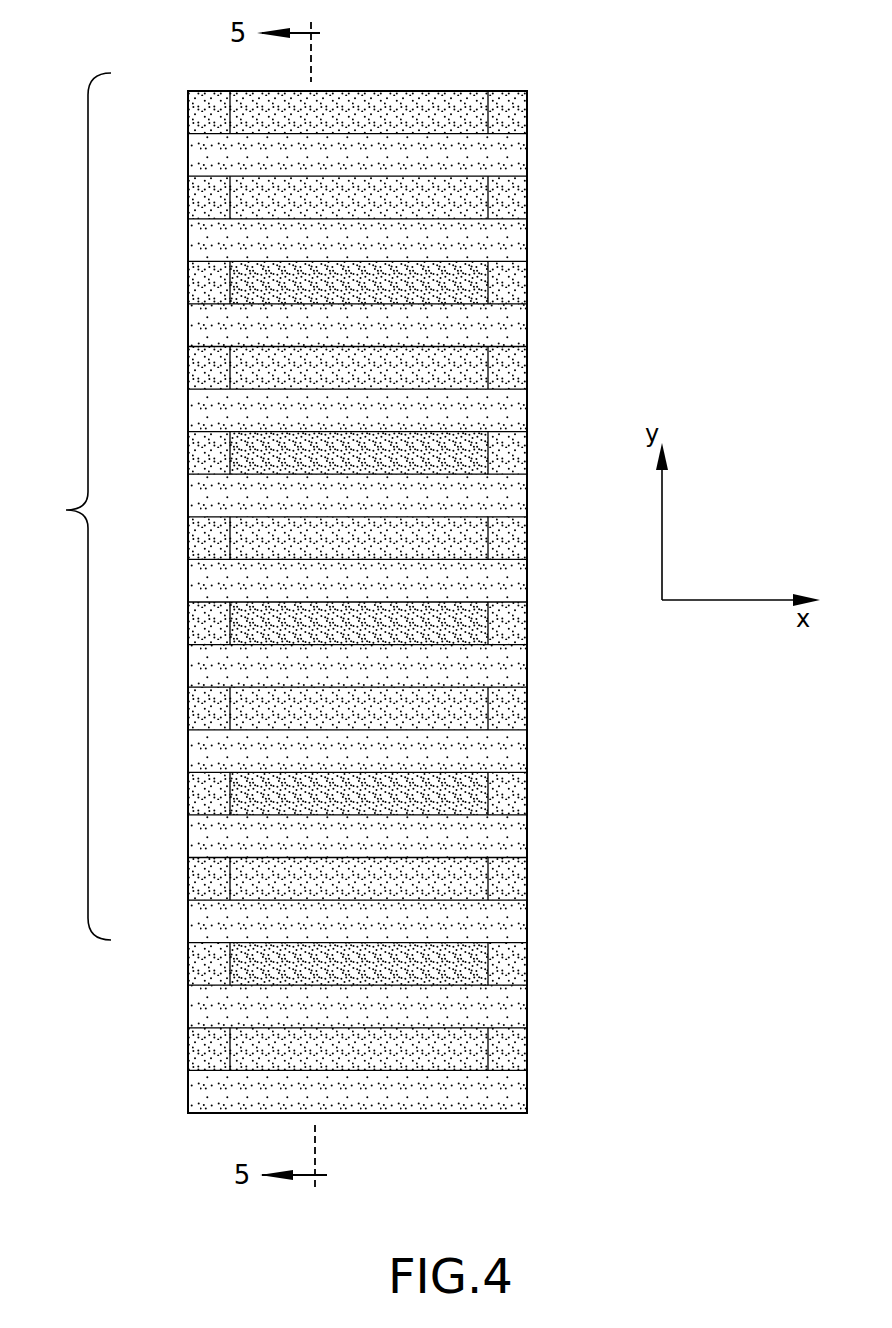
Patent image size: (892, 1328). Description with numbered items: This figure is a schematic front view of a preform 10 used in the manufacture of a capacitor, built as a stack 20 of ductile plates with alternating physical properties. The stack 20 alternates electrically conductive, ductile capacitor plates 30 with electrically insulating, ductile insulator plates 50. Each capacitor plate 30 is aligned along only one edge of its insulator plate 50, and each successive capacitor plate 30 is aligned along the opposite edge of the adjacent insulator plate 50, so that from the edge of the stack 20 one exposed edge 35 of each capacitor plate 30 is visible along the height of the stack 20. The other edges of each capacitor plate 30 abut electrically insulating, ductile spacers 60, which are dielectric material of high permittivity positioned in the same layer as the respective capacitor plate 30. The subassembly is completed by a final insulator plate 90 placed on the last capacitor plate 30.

The preform 10 is at (588, 114).
The stack 20 is at (66, 510).
The capacitor plate 30 is at (470, 448).
The exposed edge 35 is at (462, 262).
The insulator plate 50 is at (485, 322).
The spacer 60 is at (505, 102).
The final insulator plate 90 is at (507, 1092).